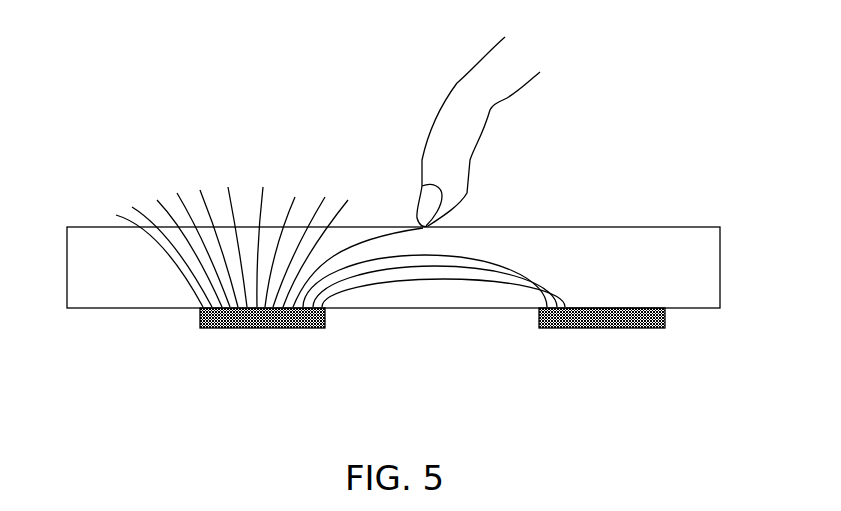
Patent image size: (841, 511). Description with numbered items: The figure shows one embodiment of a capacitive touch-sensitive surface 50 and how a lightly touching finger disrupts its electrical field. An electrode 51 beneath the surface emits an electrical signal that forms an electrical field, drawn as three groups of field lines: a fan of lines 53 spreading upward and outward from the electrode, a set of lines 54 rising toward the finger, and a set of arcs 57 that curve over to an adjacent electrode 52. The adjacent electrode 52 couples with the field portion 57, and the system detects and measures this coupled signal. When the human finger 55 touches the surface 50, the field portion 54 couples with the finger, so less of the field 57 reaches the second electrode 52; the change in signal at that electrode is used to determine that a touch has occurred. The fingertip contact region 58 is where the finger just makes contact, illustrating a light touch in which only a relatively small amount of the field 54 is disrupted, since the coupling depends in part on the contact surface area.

The touch-sensitive surface 50 is at (375, 267).
The electrode 51 is at (262, 333).
The adjacent electrode 52 is at (602, 333).
The electrical field 53 is at (232, 226).
The electrical field 54 is at (358, 264).
The human finger 55 is at (462, 132).
The electrical field 57 is at (435, 281).
The fingertip 58 is at (451, 205).